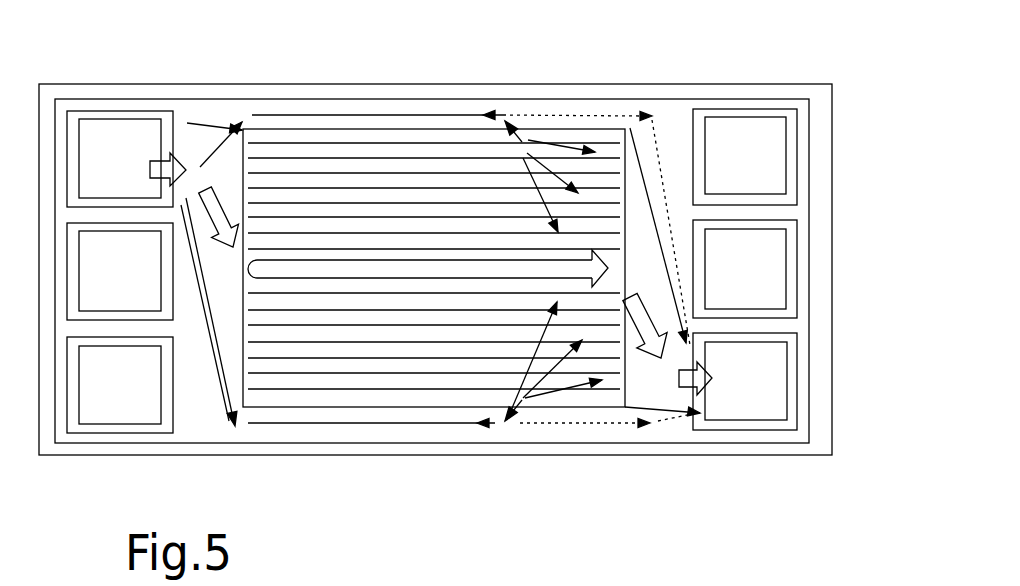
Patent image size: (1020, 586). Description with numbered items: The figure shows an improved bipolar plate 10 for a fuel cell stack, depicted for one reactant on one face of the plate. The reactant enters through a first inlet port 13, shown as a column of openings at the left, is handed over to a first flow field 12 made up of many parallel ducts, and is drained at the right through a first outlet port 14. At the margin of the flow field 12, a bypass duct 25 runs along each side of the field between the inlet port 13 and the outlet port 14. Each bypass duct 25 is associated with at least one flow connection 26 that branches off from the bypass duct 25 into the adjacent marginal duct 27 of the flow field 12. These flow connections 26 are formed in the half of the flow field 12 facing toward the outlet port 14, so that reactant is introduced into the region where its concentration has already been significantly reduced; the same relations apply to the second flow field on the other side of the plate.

The bipolar plate 10 is at (767, 72).
The flow field 12 is at (392, 172).
The first inlet port 13 is at (97, 137).
The first outlet port 14 is at (770, 390).
The bypass duct 25 is at (295, 114).
The flow connection 26 is at (506, 120).
The marginal duct 27 is at (602, 127).